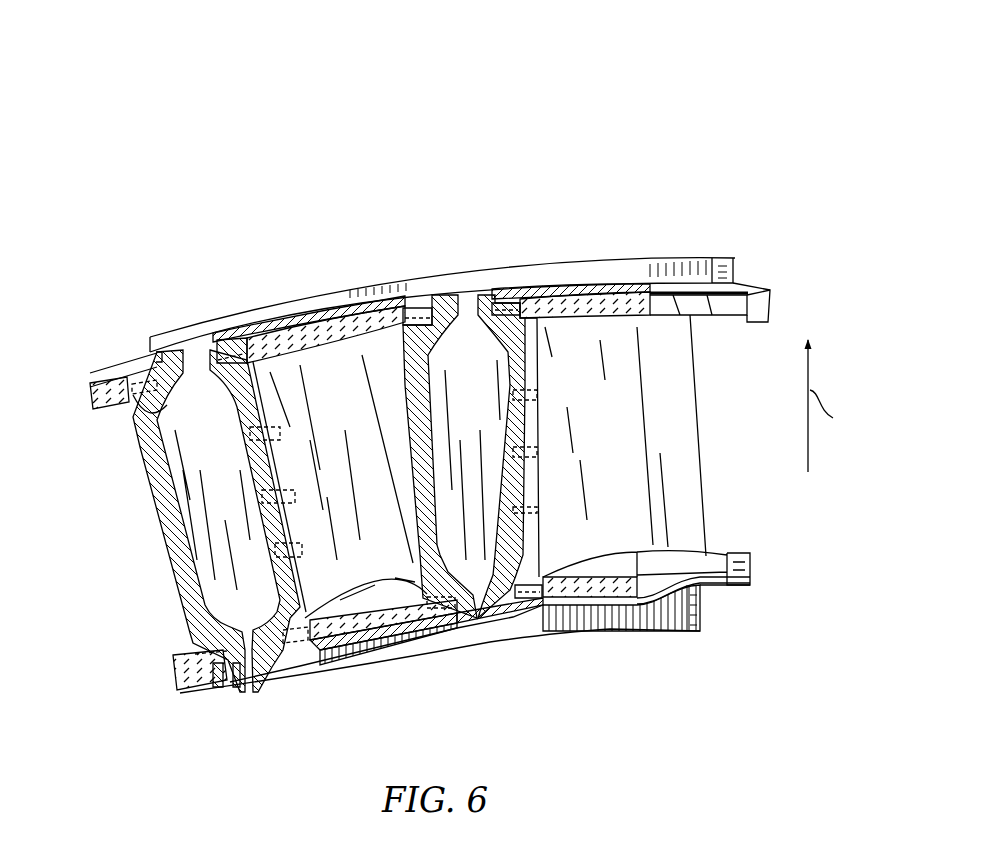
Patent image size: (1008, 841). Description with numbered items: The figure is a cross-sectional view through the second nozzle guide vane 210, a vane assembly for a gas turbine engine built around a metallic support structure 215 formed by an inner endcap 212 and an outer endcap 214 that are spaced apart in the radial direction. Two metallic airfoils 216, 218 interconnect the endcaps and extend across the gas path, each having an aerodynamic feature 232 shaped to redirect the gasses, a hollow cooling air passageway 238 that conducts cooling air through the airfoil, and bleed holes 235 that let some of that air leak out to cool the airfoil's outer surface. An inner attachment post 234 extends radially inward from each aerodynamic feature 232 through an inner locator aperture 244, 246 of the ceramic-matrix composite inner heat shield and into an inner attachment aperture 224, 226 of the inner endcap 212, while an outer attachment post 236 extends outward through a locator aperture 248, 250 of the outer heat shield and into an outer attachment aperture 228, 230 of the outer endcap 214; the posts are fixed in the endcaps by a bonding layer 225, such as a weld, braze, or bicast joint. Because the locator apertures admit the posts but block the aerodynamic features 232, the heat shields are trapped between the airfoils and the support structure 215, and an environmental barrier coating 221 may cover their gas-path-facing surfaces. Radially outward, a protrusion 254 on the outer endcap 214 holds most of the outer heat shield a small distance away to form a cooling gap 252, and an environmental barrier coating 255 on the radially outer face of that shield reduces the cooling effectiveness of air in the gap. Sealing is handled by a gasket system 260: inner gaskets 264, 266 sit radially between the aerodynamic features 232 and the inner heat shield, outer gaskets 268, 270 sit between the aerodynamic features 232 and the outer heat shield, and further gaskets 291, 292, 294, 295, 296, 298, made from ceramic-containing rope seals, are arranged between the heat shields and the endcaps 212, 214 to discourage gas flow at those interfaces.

The nozzle guide vane 210 is at (748, 110).
The inner endcap 212 is at (647, 637).
The outer endcap 214 is at (680, 247).
The metallic support structure 215 is at (628, 243).
The airfoil 216 is at (163, 595).
The airfoil 218 is at (405, 540).
The environmental barrier coating 221 is at (657, 320).
The inner attachment aperture 224 is at (293, 648).
The bonding layer 225 is at (150, 368).
The inner attachment aperture 226 is at (535, 612).
The outer attachment aperture 228 is at (207, 344).
The outer attachment aperture 230 is at (508, 300).
The aerodynamic feature 232 is at (163, 540).
The inner attachment post 234 is at (240, 673).
The bleed holes 235 is at (288, 428).
The outer attachment post 236 is at (162, 352).
The cooling air passageway 238 is at (200, 475).
The inner locator aperture 244 is at (287, 637).
The inner locator aperture 246 is at (507, 598).
The locator aperture 248 is at (152, 393).
The locator aperture 250 is at (468, 296).
The cooling gap 252 is at (680, 317).
The protrusion 254 is at (707, 303).
The environmental barrier coating 255 is at (608, 283).
The gasket system 260 is at (563, 563).
The inner gasket 264 is at (180, 682).
The inner gasket 266 is at (392, 600).
The outer gasket 268 is at (125, 408).
The outer gasket 270 is at (410, 390).
The gasket 291 is at (307, 652).
The gasket 292 is at (540, 607).
The gasket 294 is at (738, 551).
The gasket 295 is at (237, 345).
The gasket 296 is at (512, 296).
The gasket 298 is at (770, 318).